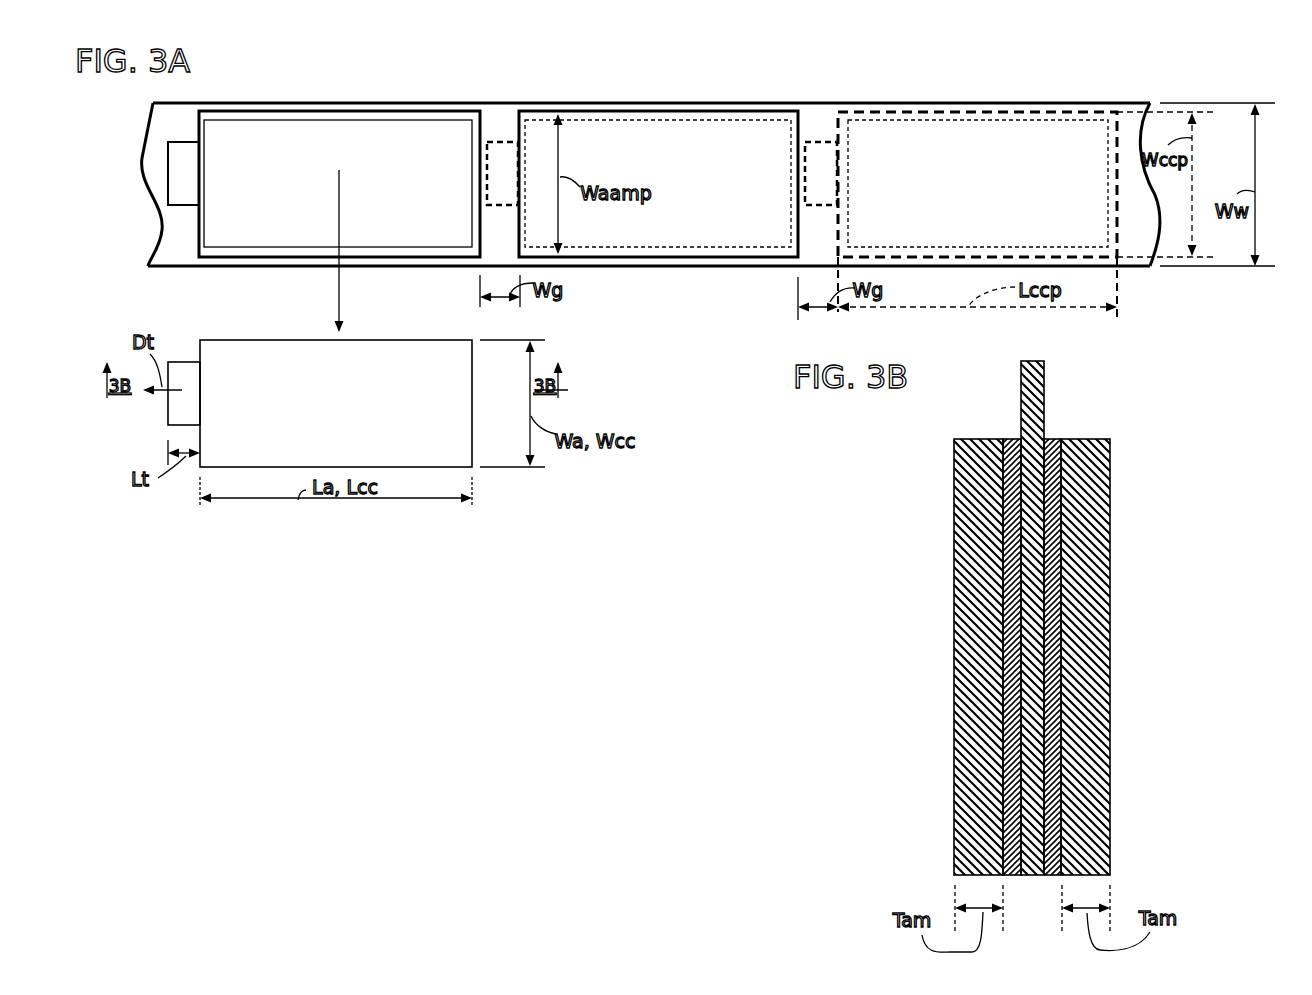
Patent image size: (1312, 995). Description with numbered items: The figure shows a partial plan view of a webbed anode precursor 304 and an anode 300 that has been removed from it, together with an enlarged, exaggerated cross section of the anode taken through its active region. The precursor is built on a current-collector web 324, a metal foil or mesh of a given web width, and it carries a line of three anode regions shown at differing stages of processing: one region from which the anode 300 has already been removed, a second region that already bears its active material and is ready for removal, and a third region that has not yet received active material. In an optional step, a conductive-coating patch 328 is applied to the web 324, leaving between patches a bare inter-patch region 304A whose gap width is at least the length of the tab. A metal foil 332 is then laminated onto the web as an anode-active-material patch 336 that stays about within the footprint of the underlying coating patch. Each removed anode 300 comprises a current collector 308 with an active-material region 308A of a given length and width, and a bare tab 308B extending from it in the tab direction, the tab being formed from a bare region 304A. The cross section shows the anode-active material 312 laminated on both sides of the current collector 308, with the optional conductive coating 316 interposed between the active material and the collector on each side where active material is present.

In FIG. 3A, the anode 300 is at (436, 510).
In FIG. 3B, the anode 300 is at (1155, 438).
In FIG. 3A, the webbed anode precursor 304 is at (364, 95).
In FIG. 3A, the bare region / inter-patch region 304A is at (498, 245).
In FIG. 3A, the current collector 308 is at (291, 438).
In FIG. 3B, the current collector 308 is at (1045, 388).
In FIG. 3A, the active-material region 308A is at (336, 403).
In FIG. 3A, the tab 308B is at (180, 412).
In FIG. 3B, the anode-active material 312 is at (1097, 581).
In FIG. 3B, the conductive coating 316 is at (1012, 437).
In FIG. 3A, the current-collector web 324 is at (1128, 135).
In FIG. 3A, the conductive-coating patch 328 is at (937, 103).
In FIG. 3A, the metal foil 332 is at (595, 222).
In FIG. 3A, the anode-active-material patch 336 is at (623, 257).